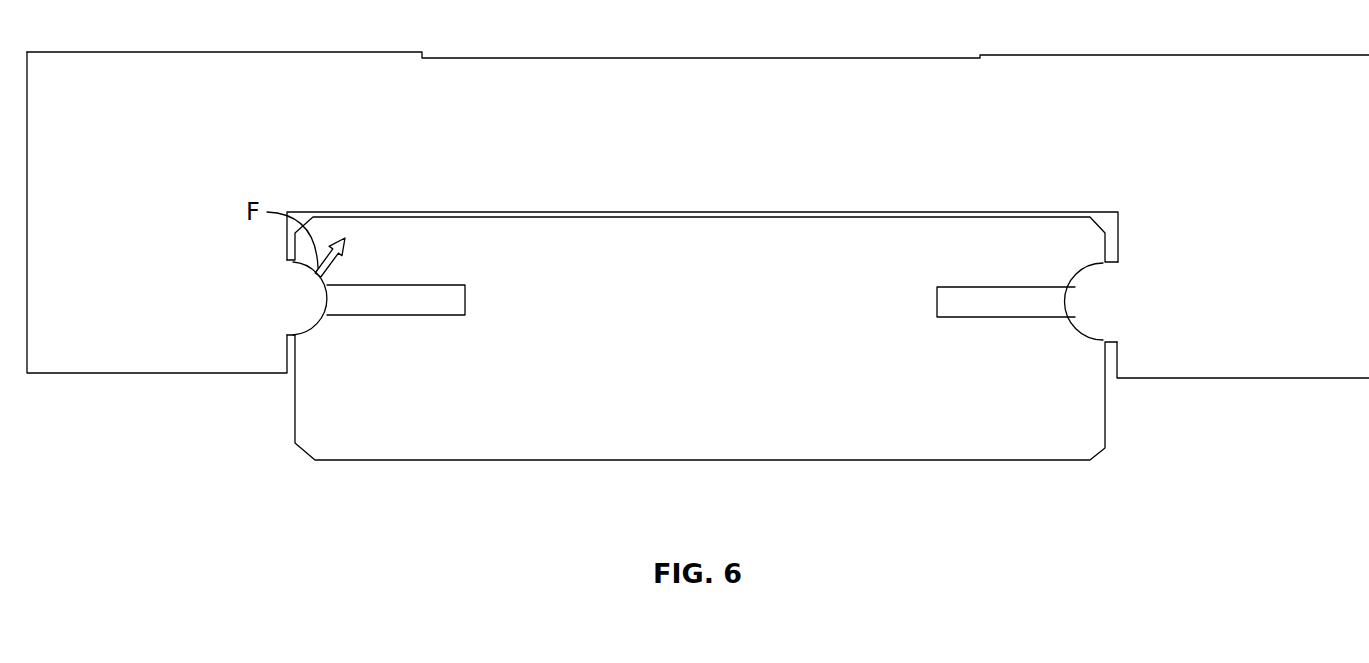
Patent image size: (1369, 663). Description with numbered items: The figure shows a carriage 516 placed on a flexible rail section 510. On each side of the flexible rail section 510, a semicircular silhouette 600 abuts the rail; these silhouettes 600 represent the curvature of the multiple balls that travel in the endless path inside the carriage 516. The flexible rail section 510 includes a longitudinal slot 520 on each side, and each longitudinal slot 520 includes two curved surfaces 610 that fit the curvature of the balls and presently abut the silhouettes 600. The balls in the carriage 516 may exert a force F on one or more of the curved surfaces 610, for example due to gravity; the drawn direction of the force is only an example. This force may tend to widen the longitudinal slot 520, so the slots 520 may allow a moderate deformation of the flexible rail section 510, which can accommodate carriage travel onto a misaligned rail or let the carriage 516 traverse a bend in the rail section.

The carriage 516 is at (108, 52).
The flexible rail section 510 is at (388, 462).
The longitudinal slot 520 is at (398, 297).
The semicircular silhouette 600 is at (332, 299).
The curved surface 610 is at (297, 269).